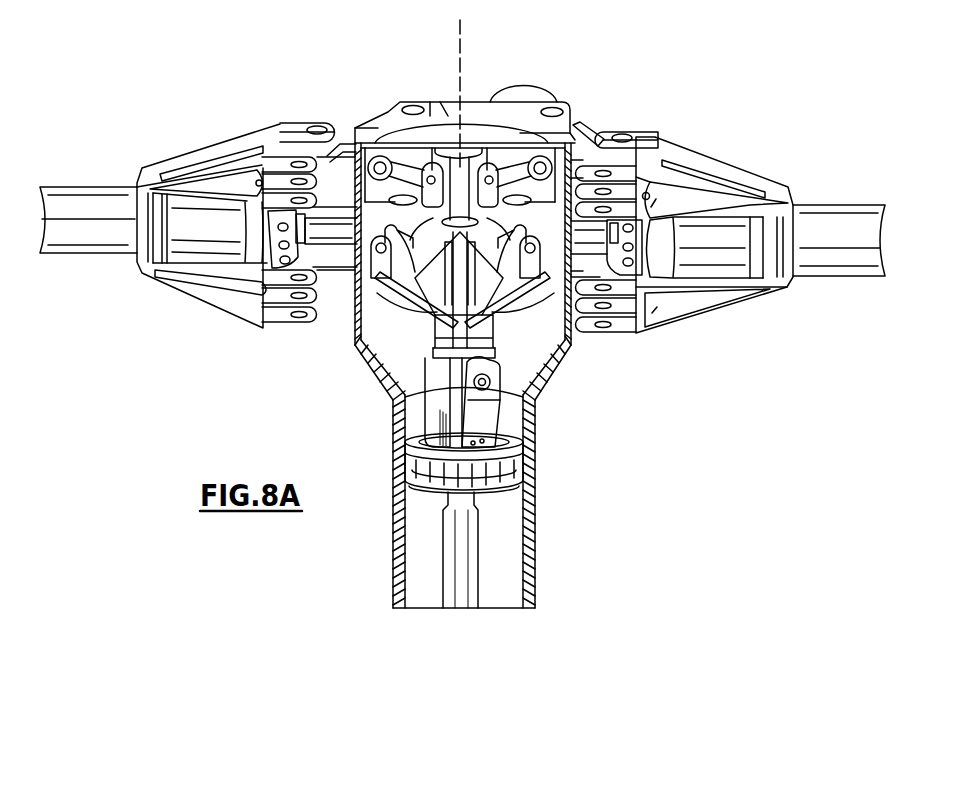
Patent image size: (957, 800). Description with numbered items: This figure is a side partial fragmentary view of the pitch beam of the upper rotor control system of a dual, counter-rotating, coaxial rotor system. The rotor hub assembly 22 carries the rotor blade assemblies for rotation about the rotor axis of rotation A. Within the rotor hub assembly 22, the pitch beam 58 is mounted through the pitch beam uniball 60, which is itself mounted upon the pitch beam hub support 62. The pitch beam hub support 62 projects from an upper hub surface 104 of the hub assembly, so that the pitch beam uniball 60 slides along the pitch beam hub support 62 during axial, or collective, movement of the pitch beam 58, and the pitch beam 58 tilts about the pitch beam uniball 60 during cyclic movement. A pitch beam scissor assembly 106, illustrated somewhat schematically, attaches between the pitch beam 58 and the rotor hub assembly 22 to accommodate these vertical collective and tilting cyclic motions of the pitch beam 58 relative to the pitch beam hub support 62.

The rotor axis of rotation A is at (462, 45).
The rotor hub assembly 22 is at (508, 228).
The pitch beam 58 is at (432, 287).
The pitch beam uniball 60 is at (488, 287).
The pitch beam hub support 62 is at (476, 193).
The upper hub surface 104 is at (417, 133).
The pitch beam scissor assembly 106 is at (587, 138).